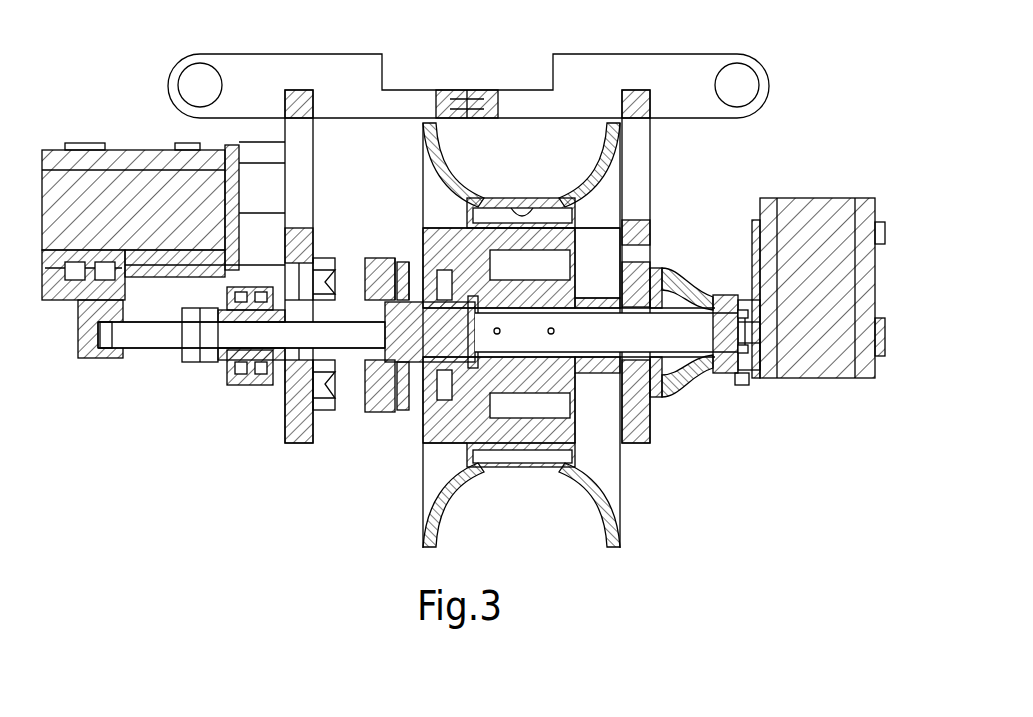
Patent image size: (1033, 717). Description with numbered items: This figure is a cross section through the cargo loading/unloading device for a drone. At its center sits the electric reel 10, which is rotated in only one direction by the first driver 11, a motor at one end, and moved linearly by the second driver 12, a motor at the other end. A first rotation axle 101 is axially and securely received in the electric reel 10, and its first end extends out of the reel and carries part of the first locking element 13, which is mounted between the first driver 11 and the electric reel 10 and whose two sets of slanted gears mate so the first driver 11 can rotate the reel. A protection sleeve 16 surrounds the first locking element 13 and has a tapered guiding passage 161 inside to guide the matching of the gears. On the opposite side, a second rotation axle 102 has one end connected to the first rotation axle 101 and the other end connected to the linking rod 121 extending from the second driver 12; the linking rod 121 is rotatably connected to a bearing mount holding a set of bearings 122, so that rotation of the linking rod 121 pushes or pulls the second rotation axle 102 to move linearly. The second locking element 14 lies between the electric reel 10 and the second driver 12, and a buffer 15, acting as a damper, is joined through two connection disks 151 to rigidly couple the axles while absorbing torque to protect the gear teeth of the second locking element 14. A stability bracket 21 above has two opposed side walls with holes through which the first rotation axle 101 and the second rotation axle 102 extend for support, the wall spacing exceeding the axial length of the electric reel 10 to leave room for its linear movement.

The electric reel 10 is at (602, 467).
The first rotation axle 101 is at (668, 330).
The second rotation axle 102 is at (360, 318).
The first driver 11 is at (803, 244).
The second driver 12 is at (143, 197).
The linking rod 121 is at (155, 328).
The bearings 122 is at (227, 372).
The first locking element 13 is at (719, 305).
The second locking element 14 is at (377, 405).
The buffer 15 is at (417, 330).
The connection disks 151 is at (417, 285).
The protection sleeve 16 is at (708, 384).
The tapered guiding passage 161 is at (666, 268).
The stability bracket 21 is at (523, 103).